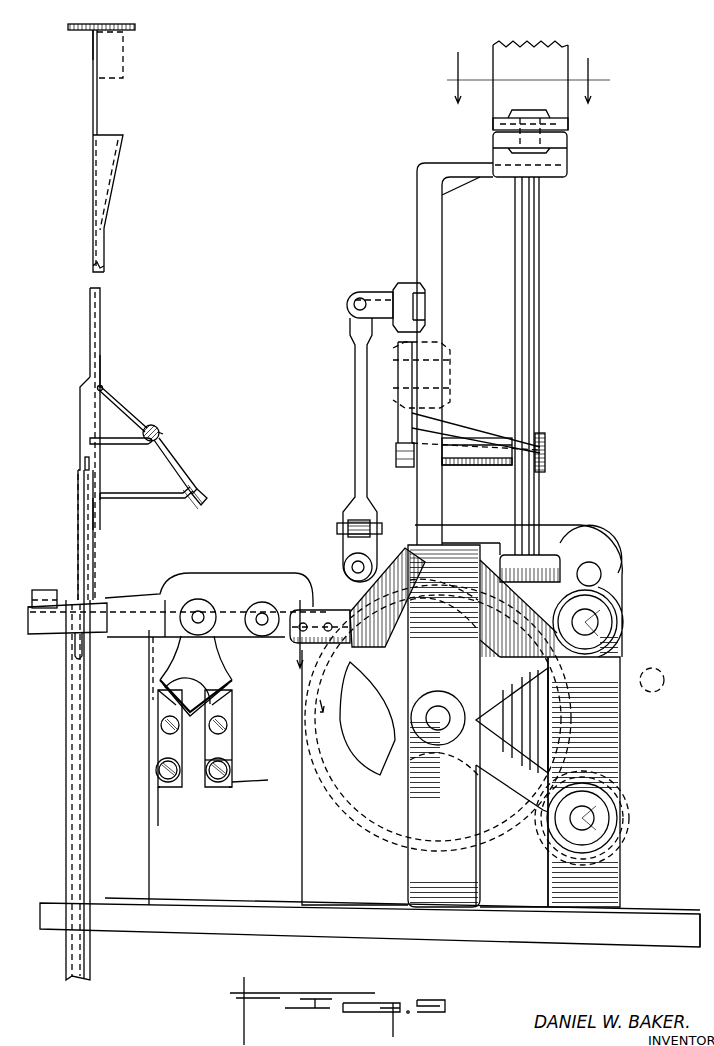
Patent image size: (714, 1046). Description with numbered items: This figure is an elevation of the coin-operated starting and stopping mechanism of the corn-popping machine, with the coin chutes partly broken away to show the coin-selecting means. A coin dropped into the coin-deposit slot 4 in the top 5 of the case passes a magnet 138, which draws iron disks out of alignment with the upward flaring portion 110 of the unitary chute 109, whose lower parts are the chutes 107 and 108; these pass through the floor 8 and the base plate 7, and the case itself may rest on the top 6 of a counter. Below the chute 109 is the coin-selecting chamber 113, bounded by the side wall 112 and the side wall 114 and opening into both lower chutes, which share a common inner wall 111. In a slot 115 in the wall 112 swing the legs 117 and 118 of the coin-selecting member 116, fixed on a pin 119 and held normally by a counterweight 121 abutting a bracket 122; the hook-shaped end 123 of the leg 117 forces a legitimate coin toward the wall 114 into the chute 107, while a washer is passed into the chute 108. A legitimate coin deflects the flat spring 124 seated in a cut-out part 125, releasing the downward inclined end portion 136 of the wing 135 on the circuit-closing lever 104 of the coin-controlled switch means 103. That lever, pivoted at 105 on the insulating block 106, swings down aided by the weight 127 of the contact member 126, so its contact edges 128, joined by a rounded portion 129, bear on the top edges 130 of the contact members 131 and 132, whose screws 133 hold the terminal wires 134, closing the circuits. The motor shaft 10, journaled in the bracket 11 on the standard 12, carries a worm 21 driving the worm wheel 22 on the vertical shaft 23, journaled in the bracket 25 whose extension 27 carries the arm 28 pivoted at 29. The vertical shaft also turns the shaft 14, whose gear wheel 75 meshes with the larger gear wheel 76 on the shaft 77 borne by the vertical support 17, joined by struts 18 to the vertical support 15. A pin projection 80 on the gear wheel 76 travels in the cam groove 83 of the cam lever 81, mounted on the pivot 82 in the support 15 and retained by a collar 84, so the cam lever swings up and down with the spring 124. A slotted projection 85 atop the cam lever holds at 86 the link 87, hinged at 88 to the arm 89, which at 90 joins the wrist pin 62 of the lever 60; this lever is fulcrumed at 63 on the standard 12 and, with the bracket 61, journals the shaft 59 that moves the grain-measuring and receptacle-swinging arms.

The coin-deposit slot 4 is at (100, 26).
The top 5 is at (80, 30).
The magnet 138 is at (123, 60).
The unitary chute 109 is at (92, 250).
The upward flaring portion 110 is at (118, 168).
The coin-selecting chamber 113 is at (88, 414).
The side wall 114 is at (80, 390).
The slot 115 is at (100, 380).
The hook-shaped end 123 is at (103, 387).
The leg 117 is at (130, 414).
The coin-selecting member 116 is at (167, 433).
The pin 119 is at (160, 434).
The leg 118 is at (118, 446).
The common inner wall 111 is at (85, 462).
The counterweight 121 is at (203, 495).
The bracket 122 is at (162, 500).
The side wall 112 is at (100, 548).
The wing 135 is at (44, 590).
The downward inclined end portion 136 is at (32, 605).
The flat spring 124 is at (100, 636).
The cut-out part 125 is at (75, 648).
The circuit-closing lever 104 is at (140, 596).
The pivot 105 is at (262, 602).
The contact member 126 is at (215, 650).
The weight 127 is at (215, 676).
The top edges 130 is at (230, 698).
The contact edges 128 is at (150, 680).
The coin-controlled switch means 103 is at (146, 701).
The contact member 131 is at (160, 740).
The screws 133 is at (208, 764).
The rounded portion 129 is at (232, 740).
The contact member 132 is at (232, 760).
The chute 107 is at (68, 752).
The chute 108 is at (90, 800).
The terminal wires 134 is at (250, 782).
The block 106 is at (203, 827).
The floor 8 is at (270, 917).
The base plate 7 is at (668, 915).
The top of a counter 6 is at (528, 77).
The vertical shaft 23 is at (513, 290).
The arm 28 is at (493, 124).
The pivotal connection 29 is at (568, 122).
The extension 27 is at (568, 156).
The standard 12 is at (417, 232).
The bracket 25 is at (487, 177).
The wrist pin 62 is at (380, 283).
The pivotal connection 90 is at (353, 310).
The arm 89 is at (355, 409).
The lever 60 is at (398, 420).
The fulcrum 63 is at (450, 362).
The bracket 61 is at (480, 432).
The shaft 59 is at (548, 455).
The hinge 88 is at (340, 520).
The link 87 is at (337, 530).
The pivotal connection 86 is at (344, 560).
The worm wheel 22 is at (470, 520).
The bracket 11 is at (555, 528).
The motor shaft 10 is at (600, 570).
The projection 85 is at (345, 608).
The cam lever 81 is at (398, 566).
The vertical support 17 is at (391, 726).
The pin projection 80 is at (352, 648).
The shaft 77 is at (430, 728).
The struts 18 is at (516, 733).
The vertical support 15 is at (612, 742).
The larger gear wheel 76 is at (500, 855).
The worm 21 is at (618, 596).
The collar 84 is at (617, 618).
The pivot 82 is at (598, 630).
The cam groove 83 is at (652, 680).
The gear wheel 75 is at (618, 818).
The shaft 14 is at (618, 845).